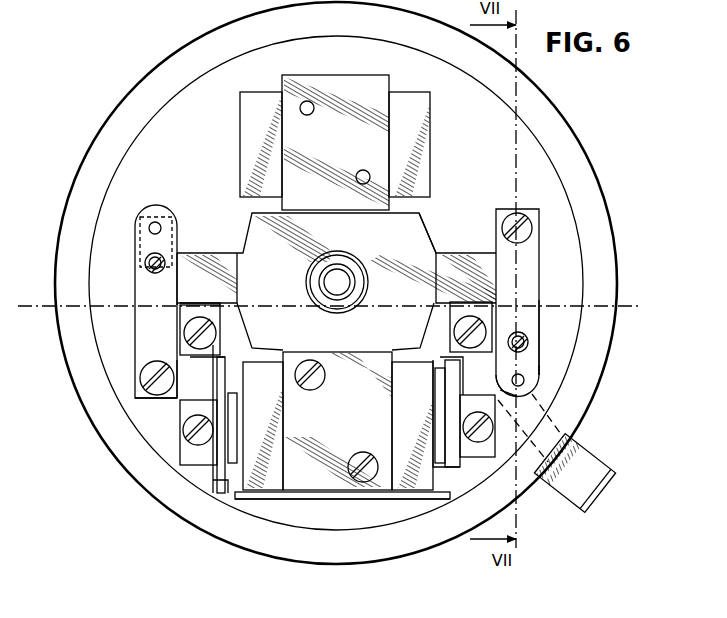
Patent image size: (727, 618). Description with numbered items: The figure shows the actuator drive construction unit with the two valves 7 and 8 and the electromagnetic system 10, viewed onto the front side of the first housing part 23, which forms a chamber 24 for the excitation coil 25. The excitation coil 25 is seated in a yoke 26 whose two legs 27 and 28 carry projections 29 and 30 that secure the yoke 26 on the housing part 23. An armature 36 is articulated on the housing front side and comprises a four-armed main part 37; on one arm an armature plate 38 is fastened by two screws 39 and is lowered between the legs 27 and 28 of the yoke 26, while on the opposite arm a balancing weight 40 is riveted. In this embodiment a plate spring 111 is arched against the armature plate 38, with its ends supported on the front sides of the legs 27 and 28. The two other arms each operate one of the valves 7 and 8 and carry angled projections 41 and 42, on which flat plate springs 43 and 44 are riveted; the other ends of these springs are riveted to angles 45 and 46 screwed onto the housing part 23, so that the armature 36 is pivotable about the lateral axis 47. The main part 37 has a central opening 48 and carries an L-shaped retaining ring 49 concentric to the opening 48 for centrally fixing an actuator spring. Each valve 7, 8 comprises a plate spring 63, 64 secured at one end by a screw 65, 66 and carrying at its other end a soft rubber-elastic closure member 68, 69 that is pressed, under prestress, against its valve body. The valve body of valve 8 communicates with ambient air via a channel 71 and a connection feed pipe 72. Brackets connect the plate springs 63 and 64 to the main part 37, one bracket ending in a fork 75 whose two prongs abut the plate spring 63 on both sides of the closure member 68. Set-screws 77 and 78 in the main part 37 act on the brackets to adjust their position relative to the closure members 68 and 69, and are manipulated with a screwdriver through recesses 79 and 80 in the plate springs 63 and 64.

The valve 7 is at (130, 352).
The valve 8 is at (546, 372).
The electromagnetic system 10 is at (470, 383).
The first housing part 23 is at (557, 120).
The chamber 24 is at (265, 495).
The excitation coil 25 is at (216, 358).
The yoke 26 is at (216, 490).
The leg of the yoke 27 is at (228, 470).
The leg of the yoke 28 is at (448, 470).
The projection 29 is at (186, 443).
The projection 30 is at (481, 458).
The armature 36 is at (432, 216).
The four-armed main part 37 is at (255, 232).
The armature plate 38 is at (223, 497).
The screw 39 is at (373, 490).
The balancing weight 40 is at (240, 120).
The angled projection 41 is at (480, 303).
The angled projection 42 is at (178, 301).
The flat plate spring 43 is at (496, 303).
The flat plate spring 44 is at (175, 303).
The angle 45 is at (487, 318).
The angle 46 is at (178, 314).
The lateral axis 47 is at (634, 305).
The central opening 48 is at (362, 270).
The retaining ring 49 is at (352, 267).
The plate spring 63 is at (140, 330).
The plate spring 64 is at (548, 410).
The screw 65 is at (135, 372).
The screw 66 is at (517, 213).
The closure member 68 is at (155, 222).
The closure member 69 is at (526, 381).
The channel 71 is at (532, 393).
The connection feed pipe 72 is at (563, 478).
The fork 75 is at (140, 228).
The set-screw 77 is at (138, 253).
The set-screw 78 is at (536, 350).
The recess 79 is at (145, 262).
The recess 80 is at (529, 342).
The plate spring 111 is at (238, 418).